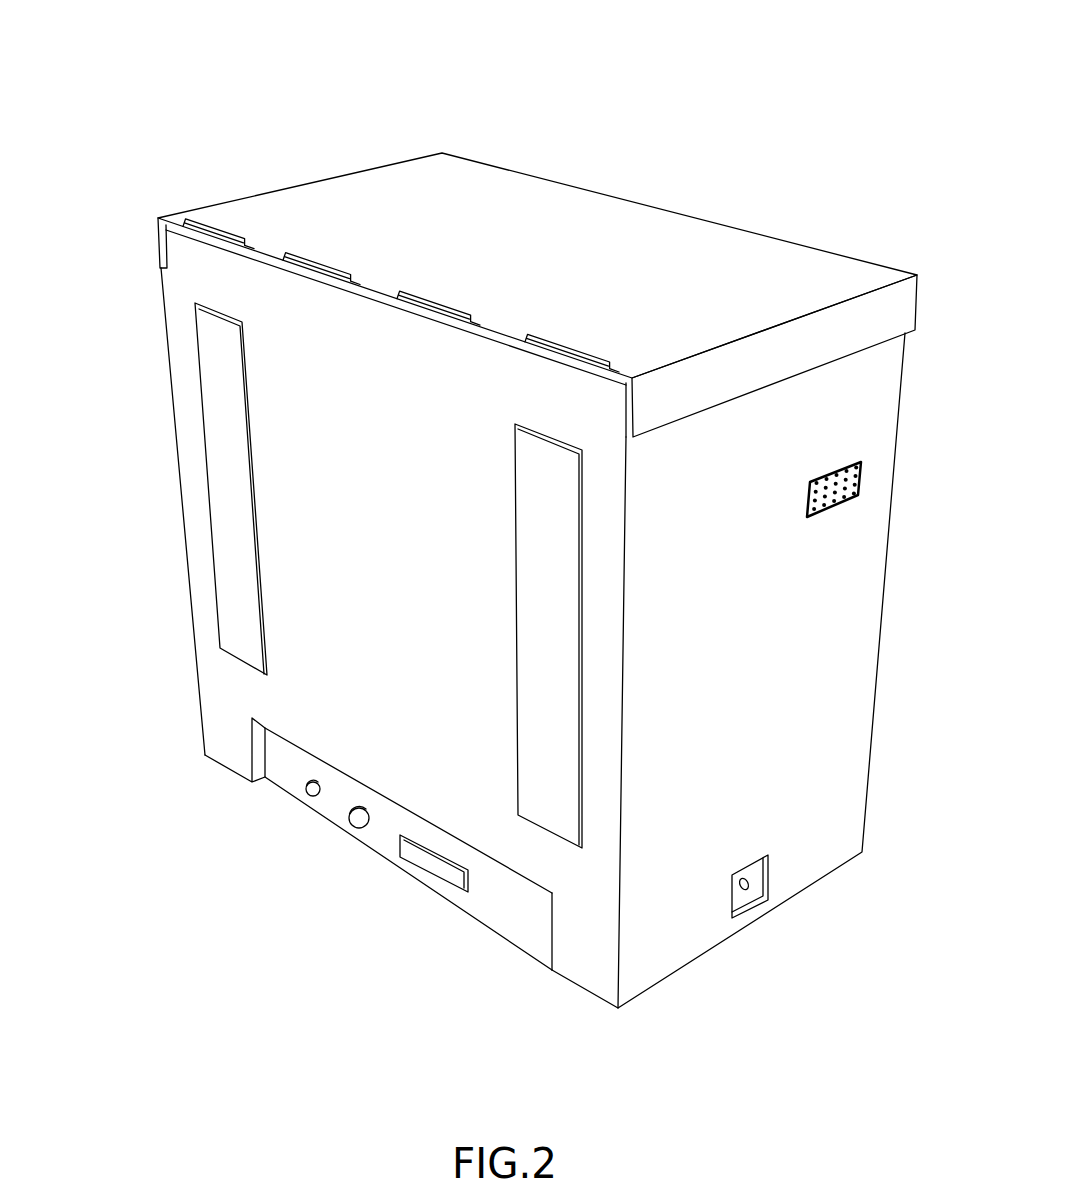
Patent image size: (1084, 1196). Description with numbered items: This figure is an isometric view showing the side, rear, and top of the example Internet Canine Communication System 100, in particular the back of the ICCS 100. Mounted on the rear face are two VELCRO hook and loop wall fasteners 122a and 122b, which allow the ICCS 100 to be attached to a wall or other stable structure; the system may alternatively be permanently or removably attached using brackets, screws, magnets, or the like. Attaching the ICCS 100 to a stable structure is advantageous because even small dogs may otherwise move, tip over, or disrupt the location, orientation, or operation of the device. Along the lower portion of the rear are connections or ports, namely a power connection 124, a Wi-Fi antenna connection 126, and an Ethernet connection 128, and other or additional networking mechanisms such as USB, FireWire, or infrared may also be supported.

The Internet Canine Communication System 100 is at (683, 115).
The hook and loop wall fastener 122a is at (222, 422).
The hook and loop wall fastener 122b is at (547, 552).
The power connection 124 is at (307, 797).
The Wi-Fi antenna connection 126 is at (350, 832).
The Ethernet connection 128 is at (430, 863).